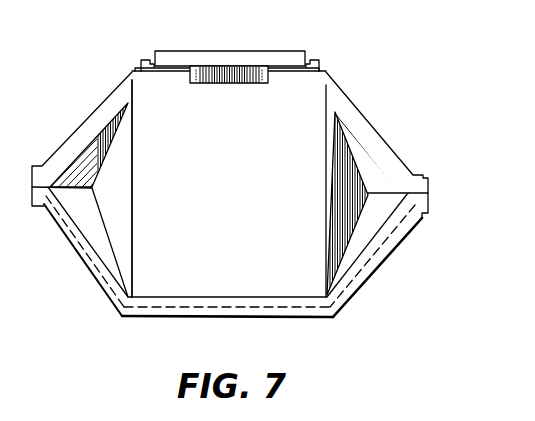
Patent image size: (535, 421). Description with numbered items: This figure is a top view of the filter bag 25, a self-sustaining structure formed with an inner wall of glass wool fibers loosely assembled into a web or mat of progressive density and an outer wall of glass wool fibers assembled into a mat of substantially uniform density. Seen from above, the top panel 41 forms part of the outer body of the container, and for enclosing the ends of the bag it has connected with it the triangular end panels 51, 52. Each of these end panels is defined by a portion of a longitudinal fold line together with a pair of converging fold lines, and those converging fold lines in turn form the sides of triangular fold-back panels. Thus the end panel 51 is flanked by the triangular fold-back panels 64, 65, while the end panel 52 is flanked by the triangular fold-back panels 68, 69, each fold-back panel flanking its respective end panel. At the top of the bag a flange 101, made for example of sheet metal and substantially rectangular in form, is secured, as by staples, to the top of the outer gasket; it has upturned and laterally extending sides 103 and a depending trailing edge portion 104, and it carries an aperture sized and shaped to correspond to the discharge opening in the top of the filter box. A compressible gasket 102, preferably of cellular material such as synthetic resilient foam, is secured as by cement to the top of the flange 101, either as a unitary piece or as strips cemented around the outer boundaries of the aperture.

The filter bag 25 is at (388, 283).
The top panel 41 is at (265, 292).
The triangular end panel 51 is at (333, 190).
The triangular end panel 52 is at (120, 180).
The triangular fold-back panel 64 is at (360, 150).
The triangular fold-back panel 65 is at (367, 240).
The triangular fold-back panel 68 is at (103, 132).
The triangular fold-back panel 69 is at (88, 230).
The flange 101 is at (279, 75).
The compressible gasket 102 is at (277, 52).
The upturned and laterally extending sides 103 is at (145, 59).
The depending trailing edge portion 104 is at (218, 83).